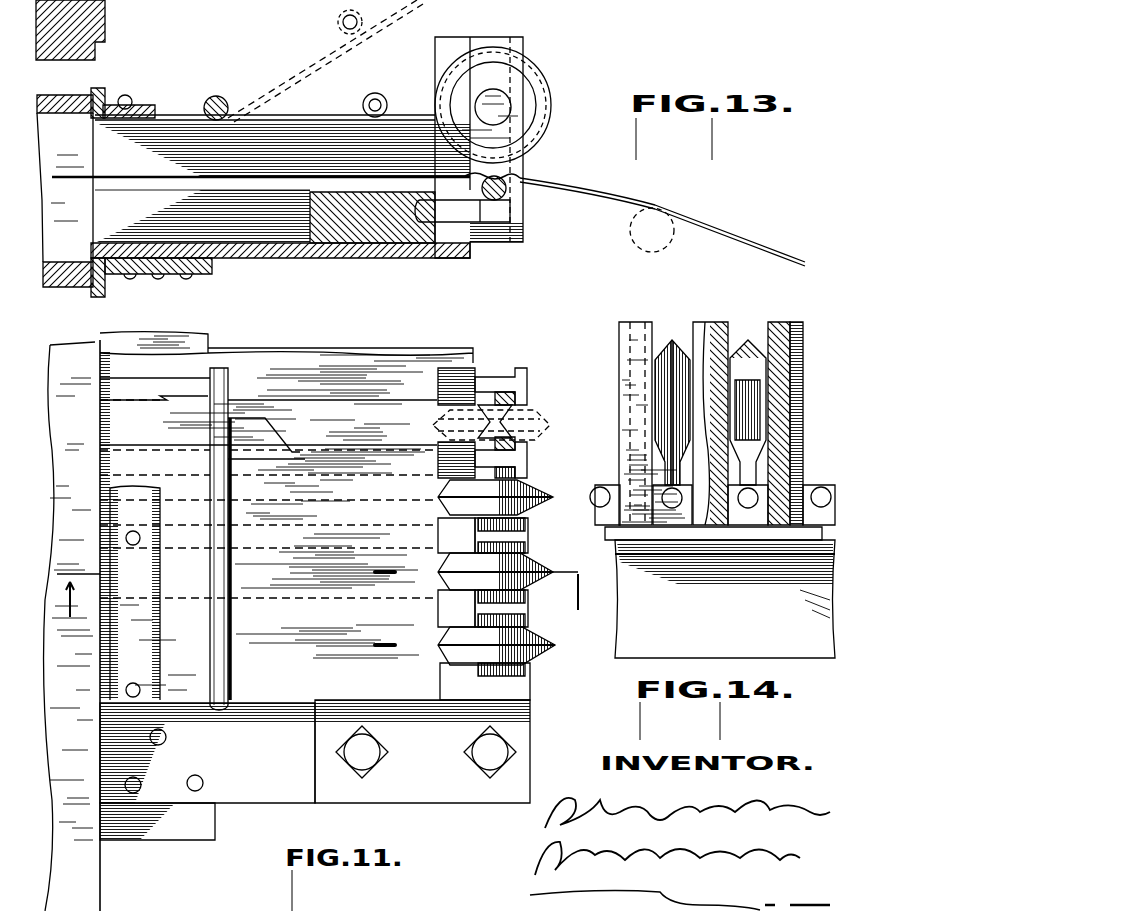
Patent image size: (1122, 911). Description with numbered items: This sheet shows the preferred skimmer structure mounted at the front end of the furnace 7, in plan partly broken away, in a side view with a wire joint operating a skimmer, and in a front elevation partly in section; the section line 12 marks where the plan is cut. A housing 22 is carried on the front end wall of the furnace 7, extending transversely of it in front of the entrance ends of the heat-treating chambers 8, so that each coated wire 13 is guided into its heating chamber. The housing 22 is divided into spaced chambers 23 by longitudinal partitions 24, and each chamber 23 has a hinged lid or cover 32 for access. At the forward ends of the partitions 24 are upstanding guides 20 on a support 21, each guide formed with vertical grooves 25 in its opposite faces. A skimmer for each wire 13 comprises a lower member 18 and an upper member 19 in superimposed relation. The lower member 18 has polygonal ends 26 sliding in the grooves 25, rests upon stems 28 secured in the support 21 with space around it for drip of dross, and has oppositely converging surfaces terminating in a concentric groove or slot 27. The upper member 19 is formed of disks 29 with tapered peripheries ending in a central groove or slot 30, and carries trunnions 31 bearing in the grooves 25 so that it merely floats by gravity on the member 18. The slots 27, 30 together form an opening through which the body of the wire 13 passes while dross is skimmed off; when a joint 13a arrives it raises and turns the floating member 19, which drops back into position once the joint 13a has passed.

In FIG. 13, the furnace 7 is at (52, 287).
In FIG. 11, the furnace 7 is at (95, 876).
In FIG. 13, the heat-treating chambers 8 is at (65, 191).
In FIG. 11, the section line 12 is at (329, 585).
In FIG. 13, the wire 13 is at (755, 248).
In FIG. 13, the joint 13a is at (520, 172).
In FIG. 13, the skimmer member 18 is at (506, 188).
In FIG. 11, the skimmer member 18 is at (513, 420).
In FIG. 14, the skimmer member 18 is at (763, 505).
In FIG. 13, the skimmer member 19 is at (534, 78).
In FIG. 11, the skimmer member 19 is at (553, 655).
In FIG. 14, the skimmer member 19 is at (735, 358).
In FIG. 13, the guides 20 is at (447, 42).
In FIG. 11, the guides 20 is at (452, 612).
In FIG. 13, the support 21 is at (392, 246).
In FIG. 11, the support 21 is at (422, 751).
In FIG. 14, the support 21 is at (812, 488).
In FIG. 13, the housing 22 is at (270, 258).
In FIG. 11, the housing 22 is at (207, 771).
In FIG. 14, the housing 22 is at (672, 540).
In FIG. 13, the chambers 23 is at (153, 140).
In FIG. 11, the chambers 23 is at (389, 459).
In FIG. 11, the longitudinal partitions 24 is at (365, 385).
In FIG. 13, the grooves 25 is at (502, 42).
In FIG. 11, the grooves 25 is at (488, 380).
In FIG. 14, the grooves 25 is at (775, 340).
In FIG. 11, the polygonal ends 26 is at (516, 447).
In FIG. 14, the polygonal ends 26 is at (800, 447).
In FIG. 14, the groove or slot 27 is at (745, 508).
In FIG. 13, the stems 28 is at (510, 216).
In FIG. 14, the stems 28 is at (600, 487).
In FIG. 13, the disks 29 is at (527, 97).
In FIG. 14, the disks 29 is at (682, 360).
In FIG. 13, the groove or slot 30 is at (520, 70).
In FIG. 11, the groove or slot 30 is at (556, 645).
In FIG. 14, the groove or slot 30 is at (752, 345).
In FIG. 13, the trunnions 31 is at (503, 115).
In FIG. 11, the trunnions 31 is at (520, 675).
In FIG. 14, the trunnions 31 is at (803, 380).
In FIG. 13, the hinged lid or cover 32 is at (303, 118).
In FIG. 11, the hinged lid or cover 32 is at (252, 593).